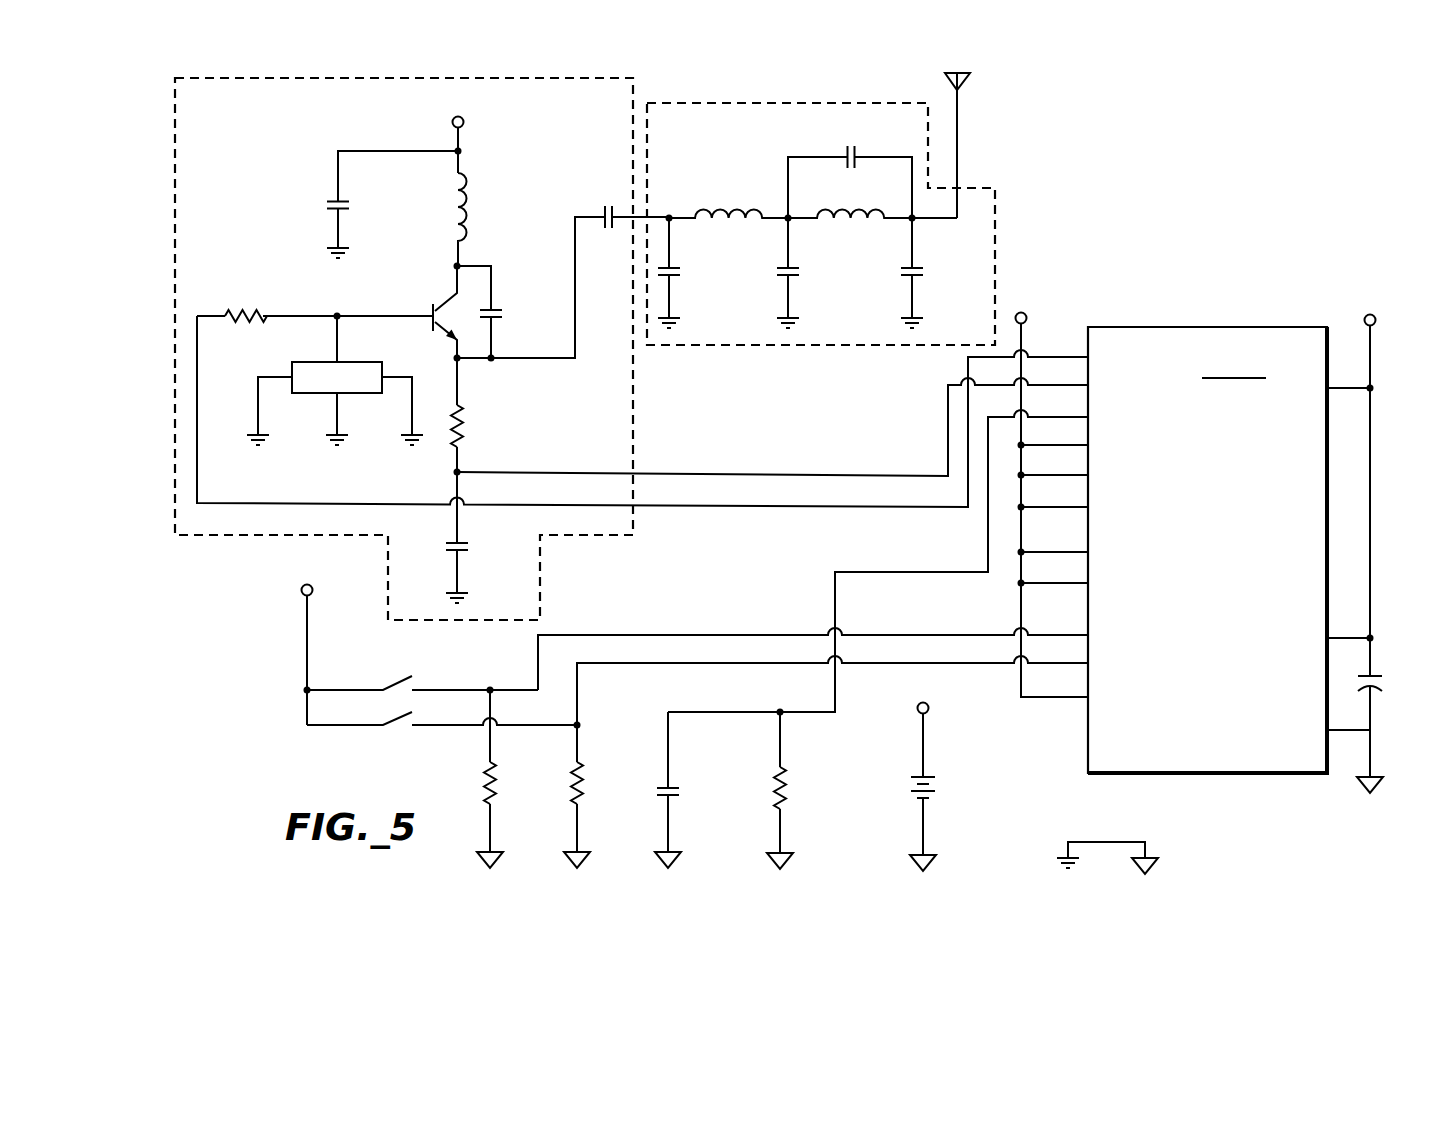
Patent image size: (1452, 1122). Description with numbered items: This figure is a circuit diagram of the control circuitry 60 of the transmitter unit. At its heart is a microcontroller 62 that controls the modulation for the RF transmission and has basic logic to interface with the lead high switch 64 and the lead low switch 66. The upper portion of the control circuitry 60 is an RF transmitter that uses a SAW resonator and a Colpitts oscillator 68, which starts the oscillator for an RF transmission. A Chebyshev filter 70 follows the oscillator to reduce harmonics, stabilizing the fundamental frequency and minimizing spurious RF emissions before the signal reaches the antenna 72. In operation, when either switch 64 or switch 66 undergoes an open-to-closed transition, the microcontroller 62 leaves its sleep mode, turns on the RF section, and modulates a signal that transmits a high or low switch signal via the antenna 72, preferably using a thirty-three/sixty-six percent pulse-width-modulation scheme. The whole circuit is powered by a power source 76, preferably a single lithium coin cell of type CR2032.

The control circuitry 60 is at (1209, 180).
The microcontroller 62 is at (1180, 337).
The lead high switch 64 is at (393, 668).
The lead low switch 66 is at (398, 738).
The Colpitts oscillator 68 is at (616, 390).
The Chebyshev filter 70 is at (708, 128).
The antenna 72 is at (968, 98).
The power source 76 is at (905, 788).